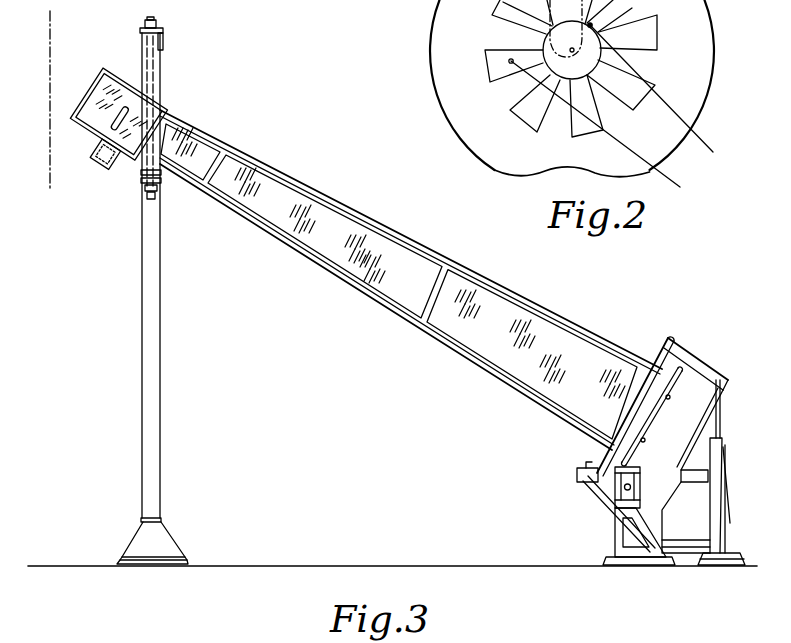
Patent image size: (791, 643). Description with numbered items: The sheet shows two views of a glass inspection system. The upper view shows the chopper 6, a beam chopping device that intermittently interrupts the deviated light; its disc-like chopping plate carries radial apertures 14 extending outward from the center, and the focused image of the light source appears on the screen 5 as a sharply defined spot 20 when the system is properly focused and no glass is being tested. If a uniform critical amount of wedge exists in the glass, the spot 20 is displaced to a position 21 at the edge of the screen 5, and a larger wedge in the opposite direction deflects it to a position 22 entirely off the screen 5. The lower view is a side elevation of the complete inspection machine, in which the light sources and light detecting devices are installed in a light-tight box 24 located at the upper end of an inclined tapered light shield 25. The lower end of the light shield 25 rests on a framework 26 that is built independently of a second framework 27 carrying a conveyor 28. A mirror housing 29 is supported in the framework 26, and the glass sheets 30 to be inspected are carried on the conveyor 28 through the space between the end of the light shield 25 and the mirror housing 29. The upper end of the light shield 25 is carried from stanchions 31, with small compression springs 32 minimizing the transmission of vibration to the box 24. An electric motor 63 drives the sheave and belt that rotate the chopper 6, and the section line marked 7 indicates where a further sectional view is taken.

In FIG. 2, the screen 5 is at (546, 47).
In FIG. 2, the chopper 6 is at (458, 68).
In FIG. 3, the section line 7- 7 is at (50, 11).
In FIG. 2, the apertures 14 is at (648, 33).
In FIG. 2, the spot 20 is at (572, 50).
In FIG. 2, the deflected spot position 21 is at (593, 26).
In FIG. 2, the deflected spot position 22 is at (510, 64).
In FIG. 3, the light-tight box 24 is at (116, 88).
In FIG. 3, the light shield 25 is at (398, 262).
In FIG. 3, the framework 26 is at (697, 364).
In FIG. 3, the second framework 27 is at (620, 528).
In FIG. 3, the conveyor 28 is at (612, 491).
In FIG. 3, the mirror housing 29 is at (688, 419).
In FIG. 3, the glass sheets 30 is at (668, 368).
In FIG. 3, the stanchions 31 is at (150, 290).
In FIG. 3, the compression springs 32 is at (164, 193).
In FIG. 3, the electric motor 63 is at (110, 176).